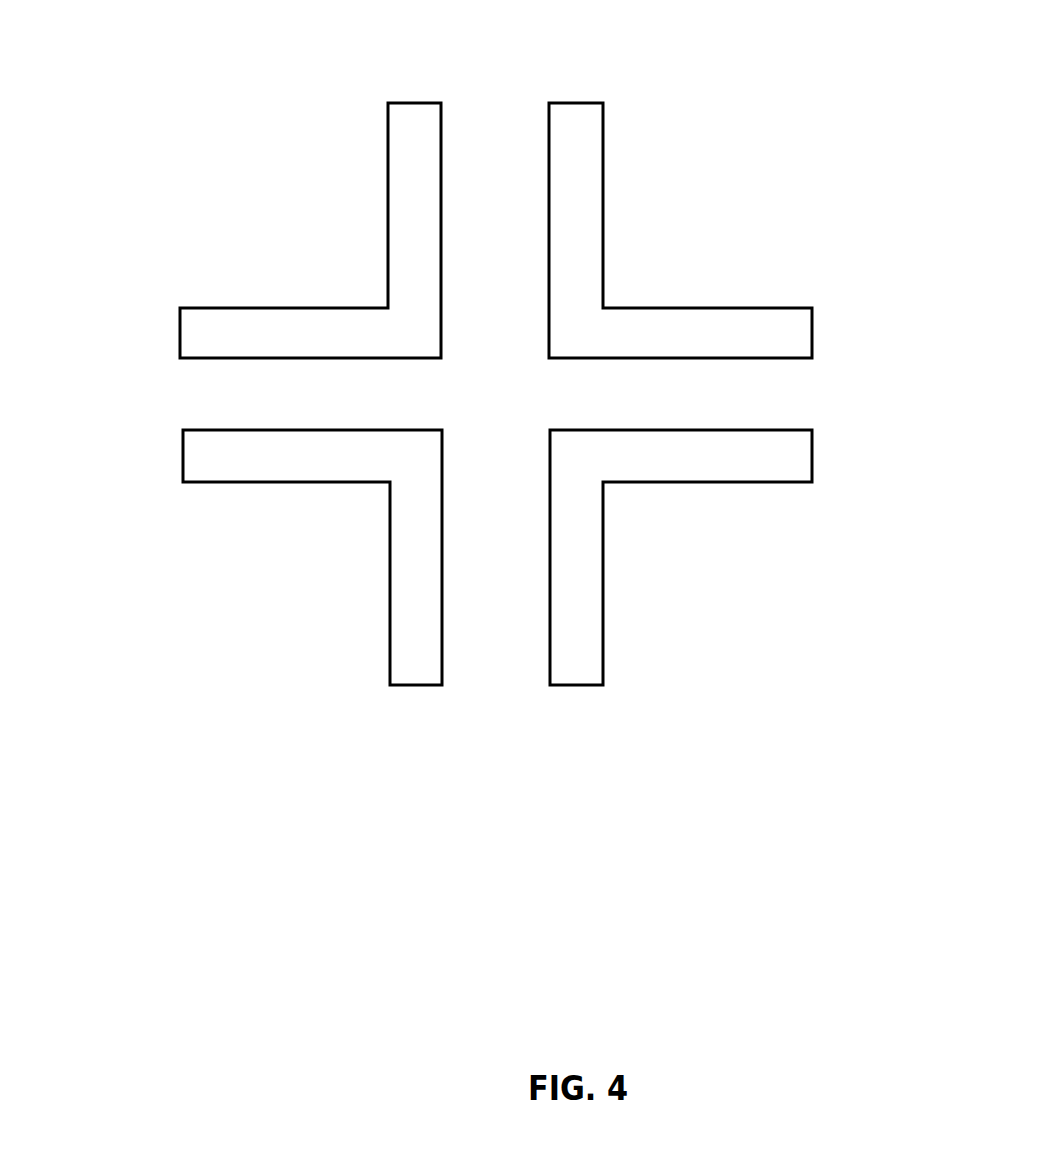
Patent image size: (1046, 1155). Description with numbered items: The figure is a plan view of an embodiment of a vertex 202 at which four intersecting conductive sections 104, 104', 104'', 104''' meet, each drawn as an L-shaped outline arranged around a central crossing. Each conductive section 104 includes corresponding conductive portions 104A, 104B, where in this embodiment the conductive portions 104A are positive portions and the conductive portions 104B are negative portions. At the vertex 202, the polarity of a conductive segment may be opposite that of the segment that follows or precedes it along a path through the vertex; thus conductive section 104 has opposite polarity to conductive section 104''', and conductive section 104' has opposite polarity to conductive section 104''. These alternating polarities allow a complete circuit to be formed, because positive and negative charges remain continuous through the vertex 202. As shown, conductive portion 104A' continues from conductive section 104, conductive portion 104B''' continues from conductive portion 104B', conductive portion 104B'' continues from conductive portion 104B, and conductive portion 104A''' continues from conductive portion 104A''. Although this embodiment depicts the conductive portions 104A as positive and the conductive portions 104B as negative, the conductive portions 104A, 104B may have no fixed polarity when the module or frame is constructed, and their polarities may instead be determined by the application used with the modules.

The vertex 202 is at (245, 148).
The conductive section 104 is at (245, 230).
The conductive section 104' is at (680, 188).
The conductive section 104'' is at (312, 600).
The conductive section 104''' is at (750, 487).
The conductive portion 104A is at (284, 305).
The conductive portion 104A' is at (371, 205).
The conductive portion 104A'' is at (625, 583).
The conductive portion 104A''' is at (707, 482).
The conductive portion 104B is at (286, 481).
The conductive portion 104B' is at (622, 205).
The conductive portion 104B'' is at (370, 583).
The conductive portion 104B''' is at (707, 305).